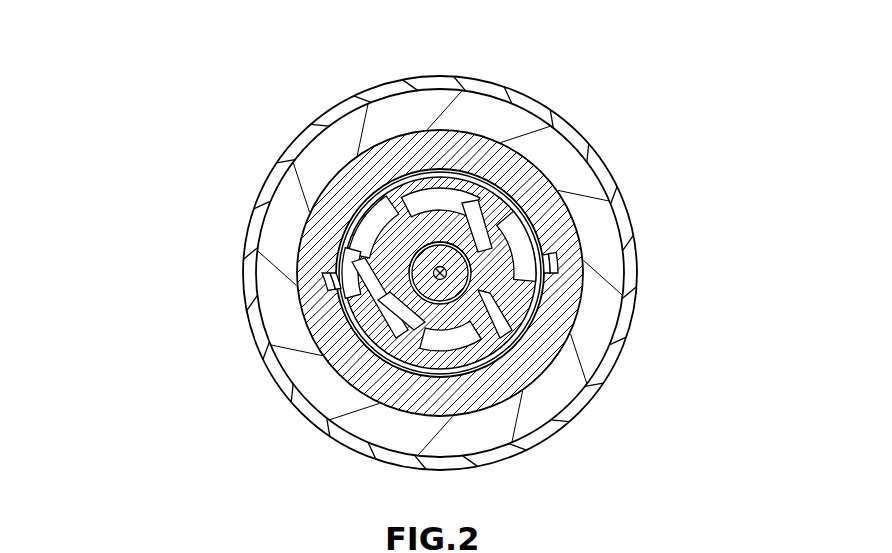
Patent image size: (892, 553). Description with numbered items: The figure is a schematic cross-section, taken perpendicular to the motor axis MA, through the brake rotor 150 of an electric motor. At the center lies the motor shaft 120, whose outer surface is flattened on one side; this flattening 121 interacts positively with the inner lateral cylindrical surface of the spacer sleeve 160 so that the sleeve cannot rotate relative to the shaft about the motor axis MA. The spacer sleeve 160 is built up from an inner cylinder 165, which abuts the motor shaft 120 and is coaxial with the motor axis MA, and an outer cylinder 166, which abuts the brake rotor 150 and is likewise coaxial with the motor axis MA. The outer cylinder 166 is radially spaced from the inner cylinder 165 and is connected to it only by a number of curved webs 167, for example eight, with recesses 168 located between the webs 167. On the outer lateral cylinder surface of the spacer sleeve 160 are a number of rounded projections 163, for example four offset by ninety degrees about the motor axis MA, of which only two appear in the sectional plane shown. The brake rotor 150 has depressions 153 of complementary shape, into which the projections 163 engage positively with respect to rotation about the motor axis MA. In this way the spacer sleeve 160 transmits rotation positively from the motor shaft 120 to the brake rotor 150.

The motor shaft 120 is at (586, 305).
The flattening 121 is at (408, 149).
The brake rotor 150 is at (349, 273).
The depressions 153 is at (439, 266).
The spacer sleeve 160 is at (521, 228).
The projections 163 is at (428, 240).
The inner cylinder 165 is at (595, 374).
The outer cylinder 166 is at (364, 335).
The curved webs 167 is at (533, 422).
The recesses 168 is at (269, 188).
The motor axis MA is at (334, 167).